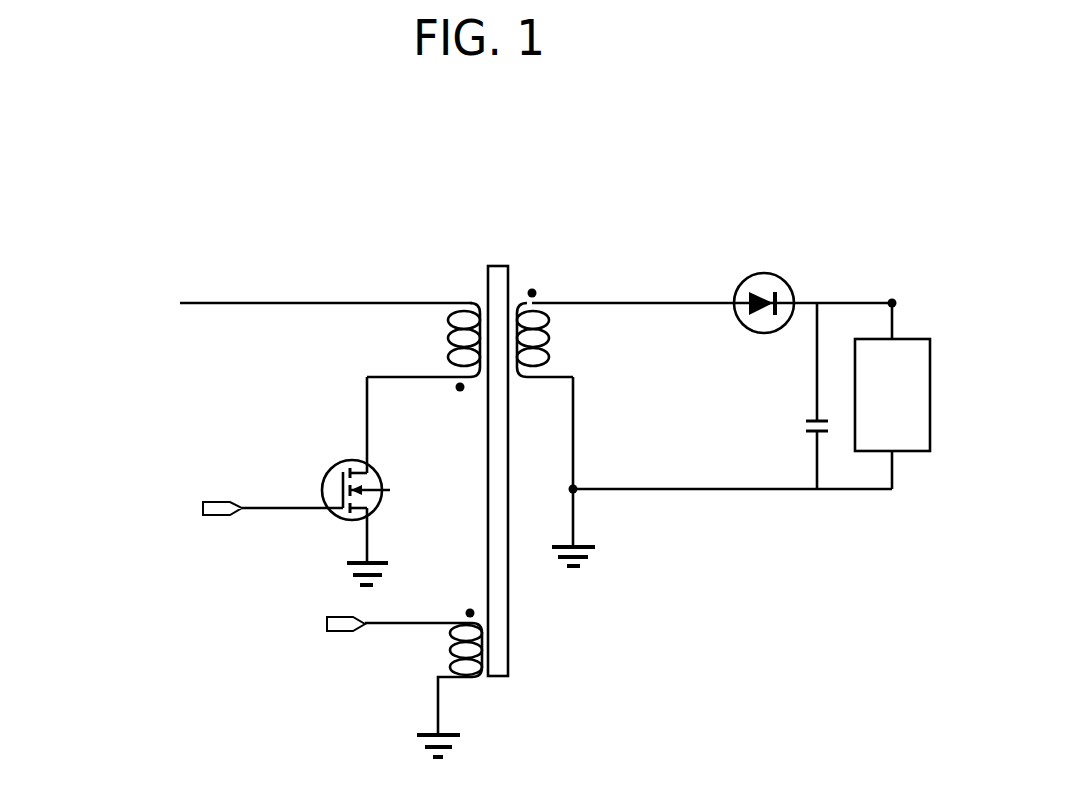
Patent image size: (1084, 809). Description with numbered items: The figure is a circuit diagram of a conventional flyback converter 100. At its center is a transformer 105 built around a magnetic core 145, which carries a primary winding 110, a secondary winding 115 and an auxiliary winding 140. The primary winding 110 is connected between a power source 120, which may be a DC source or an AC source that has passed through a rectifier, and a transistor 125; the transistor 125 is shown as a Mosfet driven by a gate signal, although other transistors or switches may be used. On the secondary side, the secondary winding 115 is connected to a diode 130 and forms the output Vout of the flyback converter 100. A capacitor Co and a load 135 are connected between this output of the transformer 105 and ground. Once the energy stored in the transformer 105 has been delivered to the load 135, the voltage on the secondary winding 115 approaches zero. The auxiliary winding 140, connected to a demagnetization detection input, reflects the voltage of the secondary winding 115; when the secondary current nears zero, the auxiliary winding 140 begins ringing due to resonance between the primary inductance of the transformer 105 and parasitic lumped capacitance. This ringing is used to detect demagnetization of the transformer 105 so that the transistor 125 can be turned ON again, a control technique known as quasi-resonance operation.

The flyback converter 100 is at (699, 176).
The transformer 105 is at (510, 278).
The primary winding 110 is at (438, 353).
The secondary winding 115 is at (593, 350).
The power source 120 is at (222, 297).
The transistor 125 is at (323, 467).
The diode 130 is at (787, 367).
The load 135 is at (913, 420).
The auxiliary winding 140 is at (452, 661).
The magnetic core 145 is at (497, 657).